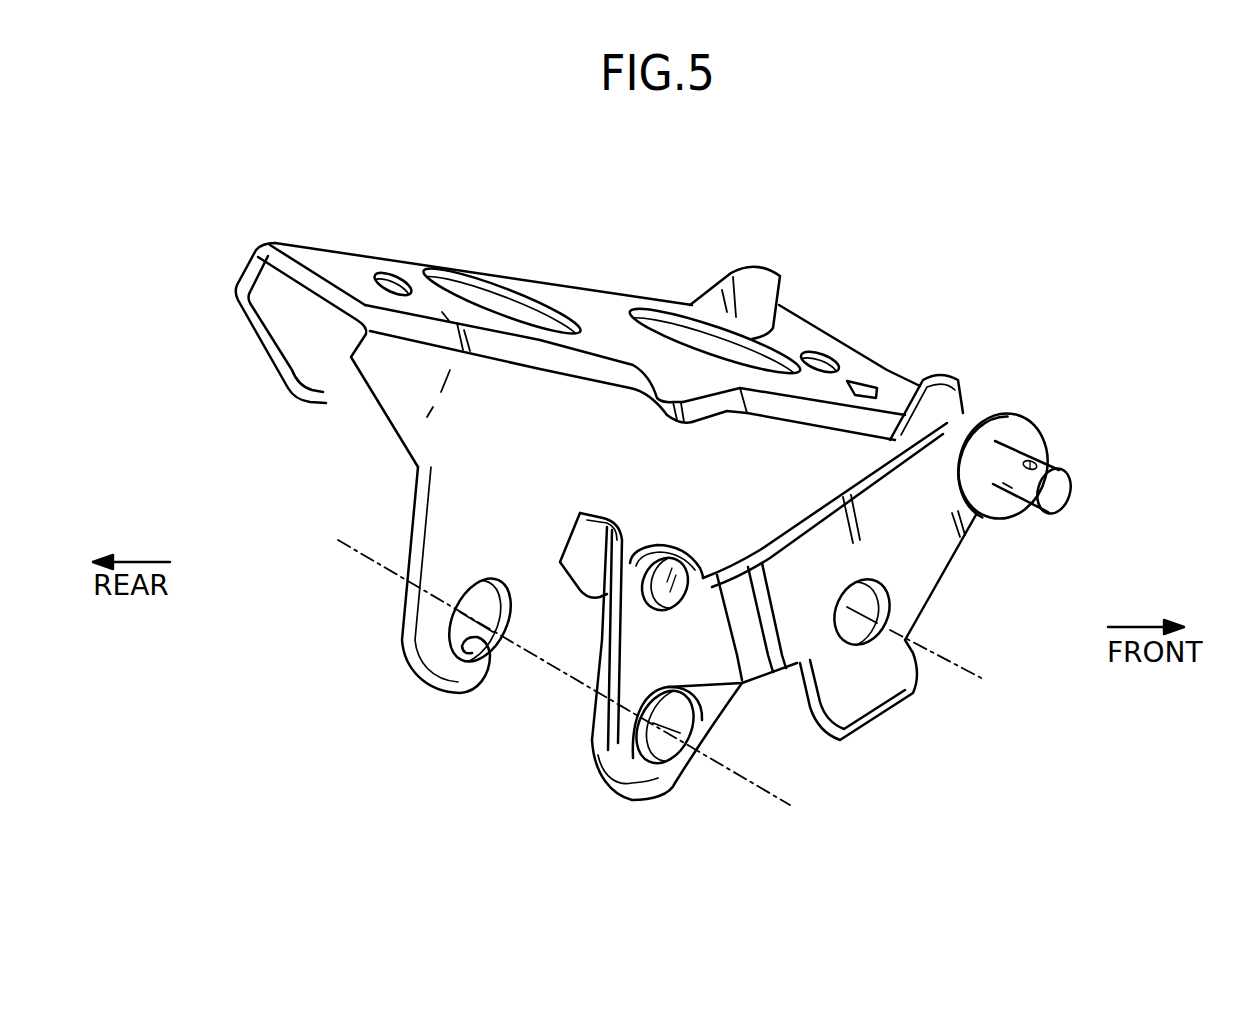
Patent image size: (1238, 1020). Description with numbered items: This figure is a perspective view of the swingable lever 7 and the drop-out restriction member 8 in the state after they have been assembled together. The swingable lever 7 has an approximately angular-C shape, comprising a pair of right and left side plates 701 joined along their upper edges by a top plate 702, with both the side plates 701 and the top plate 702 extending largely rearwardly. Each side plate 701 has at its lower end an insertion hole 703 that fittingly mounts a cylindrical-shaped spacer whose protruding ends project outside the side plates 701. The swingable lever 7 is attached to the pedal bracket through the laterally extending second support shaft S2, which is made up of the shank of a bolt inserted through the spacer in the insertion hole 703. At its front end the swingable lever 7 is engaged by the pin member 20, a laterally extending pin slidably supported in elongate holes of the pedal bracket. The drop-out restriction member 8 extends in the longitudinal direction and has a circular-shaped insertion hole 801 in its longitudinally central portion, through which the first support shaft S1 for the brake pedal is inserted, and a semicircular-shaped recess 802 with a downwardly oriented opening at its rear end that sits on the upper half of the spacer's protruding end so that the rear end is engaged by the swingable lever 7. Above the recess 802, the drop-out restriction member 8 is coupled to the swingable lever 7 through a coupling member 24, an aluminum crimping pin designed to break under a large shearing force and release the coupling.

The swingable lever 7 is at (337, 435).
The side plate 701 is at (327, 375).
The top plate 702 is at (333, 258).
The insertion hole 703 is at (470, 693).
The drop-out restriction member 8 is at (951, 602).
The insertion hole 801 is at (883, 603).
The recess 802 is at (705, 742).
The coupling member 24 is at (670, 600).
The pin member 20 is at (1035, 458).
The first support shaft S1 is at (948, 657).
The second support shaft S2 is at (755, 780).